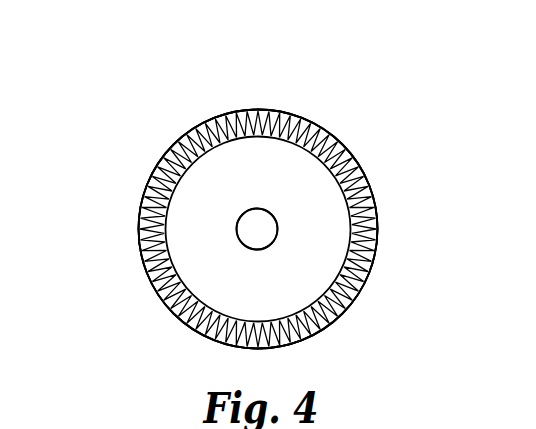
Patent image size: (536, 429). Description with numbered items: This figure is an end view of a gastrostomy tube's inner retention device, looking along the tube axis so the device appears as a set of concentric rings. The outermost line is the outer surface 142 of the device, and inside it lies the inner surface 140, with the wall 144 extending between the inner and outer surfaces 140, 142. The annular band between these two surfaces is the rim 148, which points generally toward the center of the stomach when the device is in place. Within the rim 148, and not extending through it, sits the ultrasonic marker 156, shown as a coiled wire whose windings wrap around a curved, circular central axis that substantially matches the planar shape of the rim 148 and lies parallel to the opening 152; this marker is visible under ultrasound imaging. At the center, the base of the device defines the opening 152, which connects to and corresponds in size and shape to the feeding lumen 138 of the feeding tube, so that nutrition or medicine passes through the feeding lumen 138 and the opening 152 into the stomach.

The feeding lumen 138 is at (258, 207).
The inner surface 140 is at (305, 190).
The outer surface 142 is at (368, 186).
The wall 144 is at (143, 187).
The rim 148 is at (377, 248).
The opening 152 is at (238, 237).
The ultrasonic marker 156 is at (238, 111).